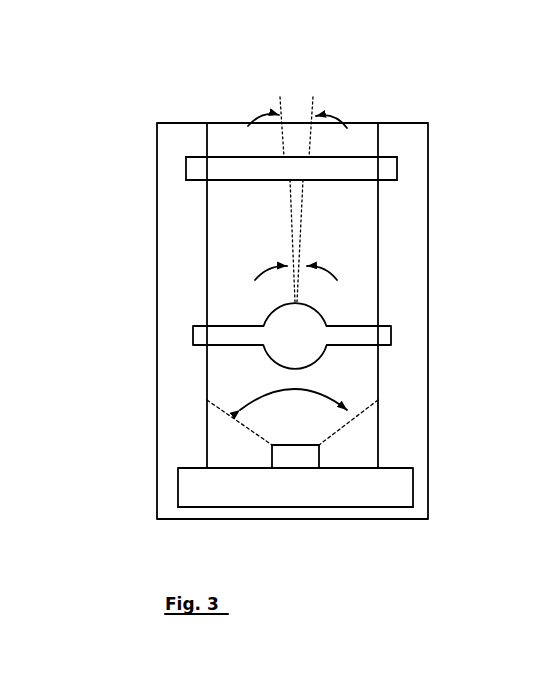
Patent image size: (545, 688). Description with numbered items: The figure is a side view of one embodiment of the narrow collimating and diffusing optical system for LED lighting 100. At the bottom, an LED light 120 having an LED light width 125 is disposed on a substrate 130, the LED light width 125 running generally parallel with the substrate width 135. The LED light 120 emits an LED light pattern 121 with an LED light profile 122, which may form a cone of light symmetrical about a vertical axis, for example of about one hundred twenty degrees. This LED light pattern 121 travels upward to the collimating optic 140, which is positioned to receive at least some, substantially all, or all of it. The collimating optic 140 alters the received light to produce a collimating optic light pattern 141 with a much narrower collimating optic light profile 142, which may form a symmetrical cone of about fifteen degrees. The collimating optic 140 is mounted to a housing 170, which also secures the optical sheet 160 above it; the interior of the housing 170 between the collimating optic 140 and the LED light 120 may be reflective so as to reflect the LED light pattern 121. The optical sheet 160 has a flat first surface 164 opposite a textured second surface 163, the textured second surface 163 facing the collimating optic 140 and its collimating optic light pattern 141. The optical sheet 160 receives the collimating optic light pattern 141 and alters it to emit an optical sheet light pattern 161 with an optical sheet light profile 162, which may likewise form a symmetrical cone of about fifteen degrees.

The narrow collimating and diffusing optical system for LED lighting 100 is at (88, 70).
The LED light 120 is at (322, 455).
The LED light pattern 121 is at (230, 388).
The LED light profile 122 is at (335, 392).
The LED light width 125 is at (279, 471).
The substrate 130 is at (416, 482).
The substrate width 135 is at (352, 510).
The collimating optic 140 is at (333, 312).
The collimating optic light pattern 141 is at (290, 250).
The collimating optic light profile 142 is at (337, 279).
The optical sheet 160 is at (400, 168).
The optical sheet light pattern 161 is at (296, 100).
The optical sheet light profile 162 is at (338, 117).
The textured second surface 163 is at (368, 183).
The flat first surface 164 is at (345, 155).
The housing 170 is at (155, 428).